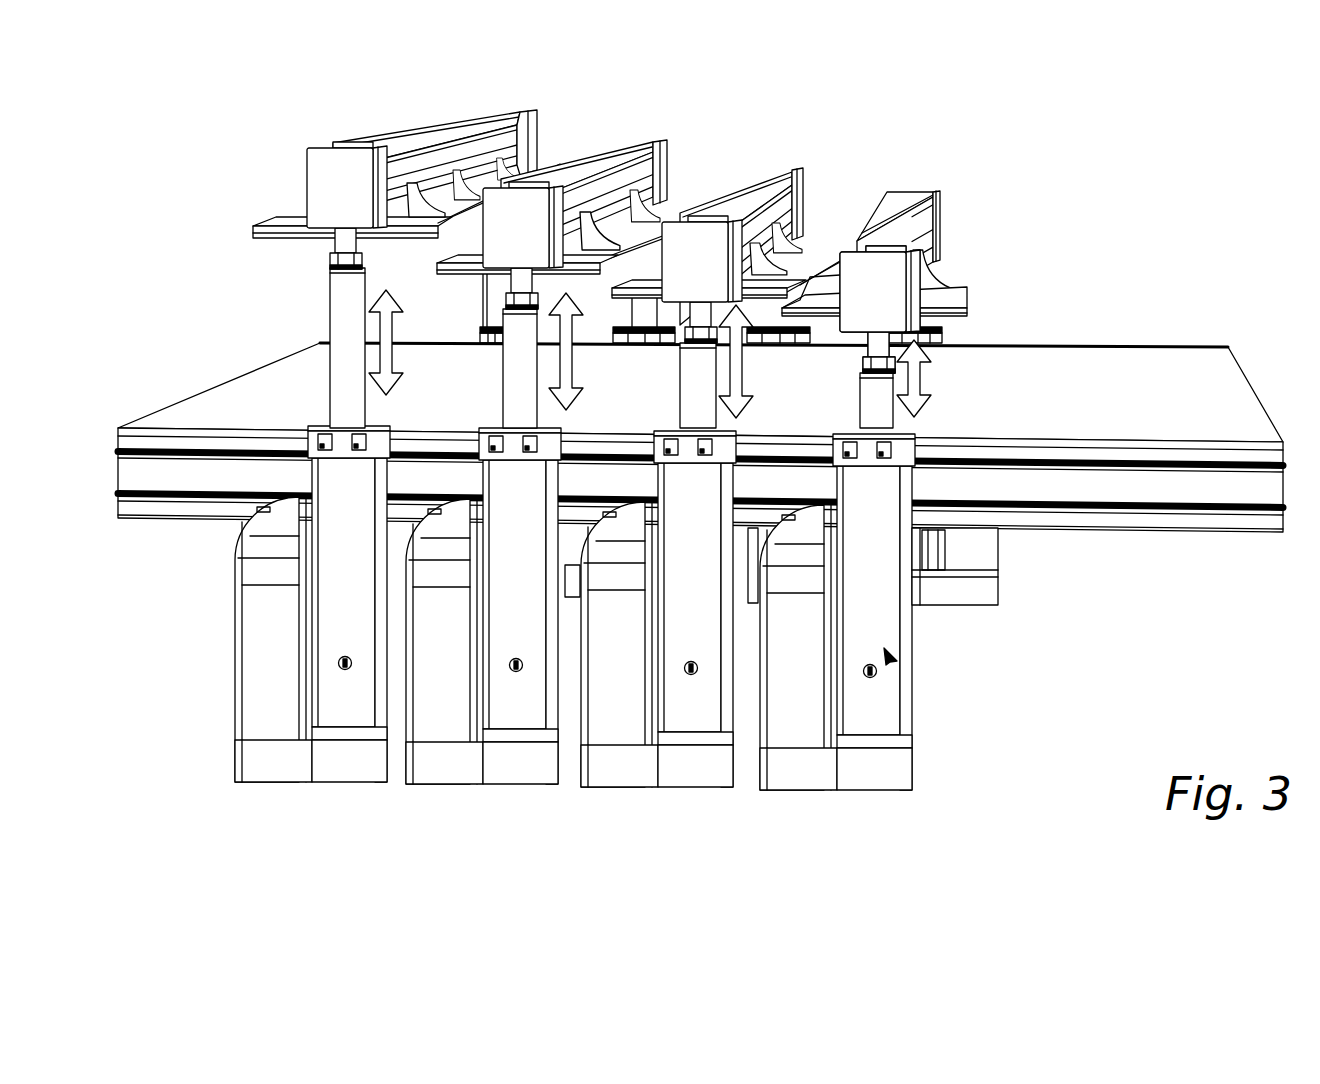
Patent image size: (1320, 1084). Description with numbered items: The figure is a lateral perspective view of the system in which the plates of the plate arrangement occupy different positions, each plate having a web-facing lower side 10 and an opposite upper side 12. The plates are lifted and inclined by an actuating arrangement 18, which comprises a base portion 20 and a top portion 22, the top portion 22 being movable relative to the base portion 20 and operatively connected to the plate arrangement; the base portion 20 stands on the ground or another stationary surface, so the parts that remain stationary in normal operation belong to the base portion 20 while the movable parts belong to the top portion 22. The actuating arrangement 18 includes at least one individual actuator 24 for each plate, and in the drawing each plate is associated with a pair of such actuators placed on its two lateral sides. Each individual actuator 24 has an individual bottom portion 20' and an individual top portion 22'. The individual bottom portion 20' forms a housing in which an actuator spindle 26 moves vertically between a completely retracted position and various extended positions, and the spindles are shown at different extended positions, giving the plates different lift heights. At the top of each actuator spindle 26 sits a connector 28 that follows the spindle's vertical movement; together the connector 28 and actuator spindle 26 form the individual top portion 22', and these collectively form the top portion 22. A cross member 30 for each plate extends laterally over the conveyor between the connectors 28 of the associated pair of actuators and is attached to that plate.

The lower side 10 is at (282, 242).
The upper side 12 is at (278, 217).
The actuating arrangement 18 is at (922, 820).
The base portion 20 is at (952, 618).
The individual bottom portion 20' is at (921, 612).
The top portion 22 is at (991, 285).
The individual top portion 22' is at (926, 279).
The individual actuator 24 is at (890, 667).
The actuator spindle 26 is at (875, 410).
The connector 28 is at (867, 283).
The cross member 30 is at (848, 258).